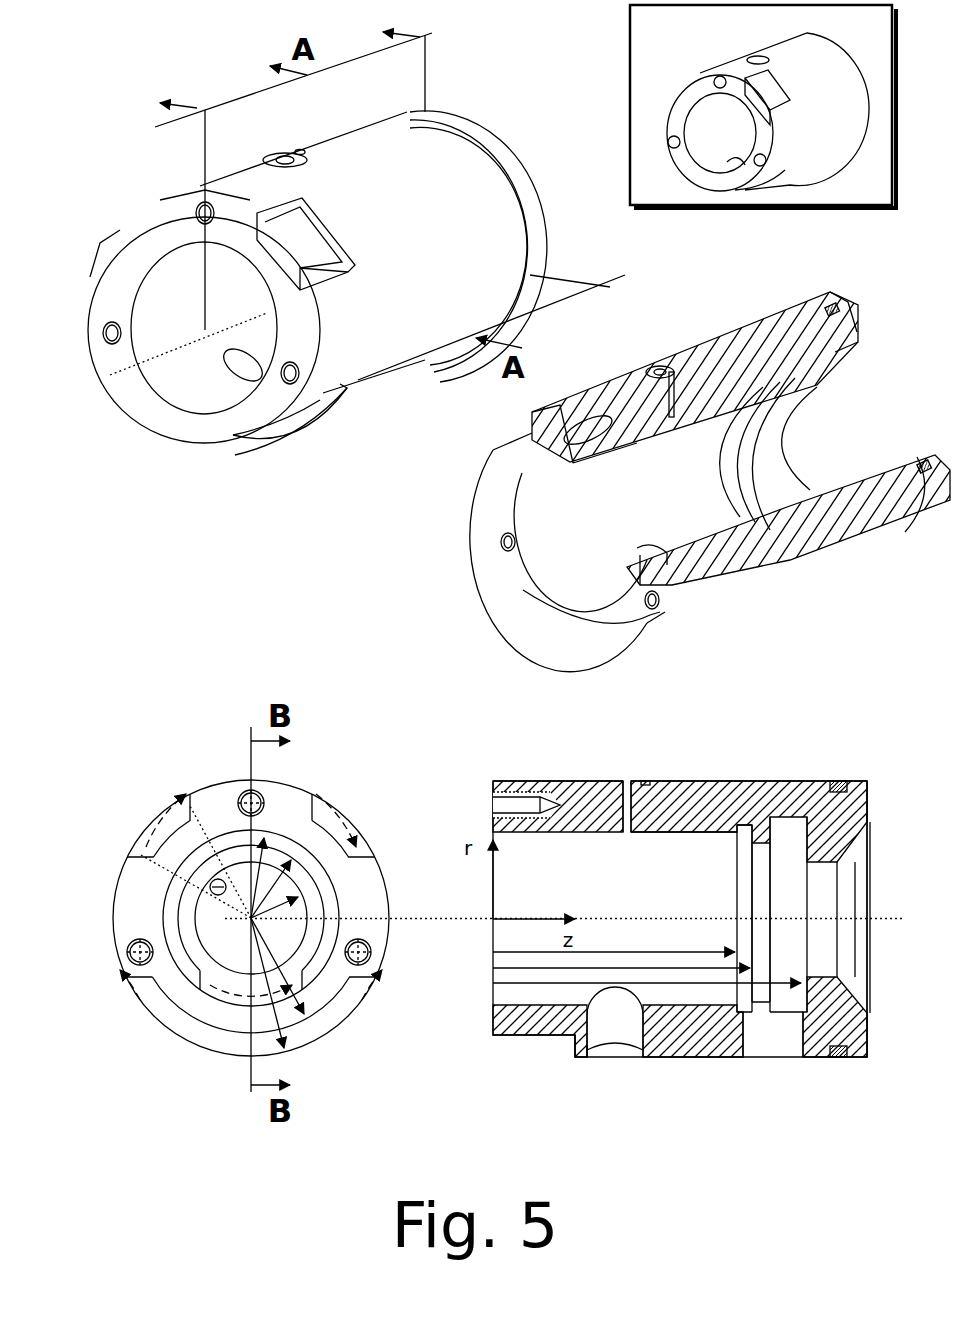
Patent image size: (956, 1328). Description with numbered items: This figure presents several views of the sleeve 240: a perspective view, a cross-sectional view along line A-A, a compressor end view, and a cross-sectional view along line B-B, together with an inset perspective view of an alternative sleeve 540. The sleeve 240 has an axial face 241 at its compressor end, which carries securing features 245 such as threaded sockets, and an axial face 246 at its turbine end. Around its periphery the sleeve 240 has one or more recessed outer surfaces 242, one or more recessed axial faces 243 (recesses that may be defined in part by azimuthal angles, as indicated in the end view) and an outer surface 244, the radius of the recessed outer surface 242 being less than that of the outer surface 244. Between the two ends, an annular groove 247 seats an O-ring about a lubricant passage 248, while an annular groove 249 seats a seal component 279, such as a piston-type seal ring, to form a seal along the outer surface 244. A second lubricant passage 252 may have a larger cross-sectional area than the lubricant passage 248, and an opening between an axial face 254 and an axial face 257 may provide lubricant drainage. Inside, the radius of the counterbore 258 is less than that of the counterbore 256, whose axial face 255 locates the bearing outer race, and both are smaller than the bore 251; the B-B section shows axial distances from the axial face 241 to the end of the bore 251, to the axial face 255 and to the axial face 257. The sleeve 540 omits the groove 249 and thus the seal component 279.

The sleeve 240 is at (472, 98).
The axial face 241 is at (190, 415).
The recessed outer surface 242 is at (280, 410).
The recessed axial face 243 is at (287, 428).
The outer surface 244 is at (347, 410).
The securing features 245 is at (117, 327).
The axial face 246 is at (530, 237).
The annular groove 247 is at (306, 160).
The lubricant passage 248 is at (285, 157).
The annular groove 249 is at (492, 222).
The bore 251 is at (545, 887).
The lubricant passage 252 is at (628, 1040).
The axial face 254 is at (745, 1050).
The axial face 255 is at (717, 433).
The counterbore 256 is at (732, 432).
The axial face 257 is at (760, 425).
The counterbore 258 is at (790, 430).
The seal component 279 is at (473, 172).
The sleeve 540 is at (726, 44).